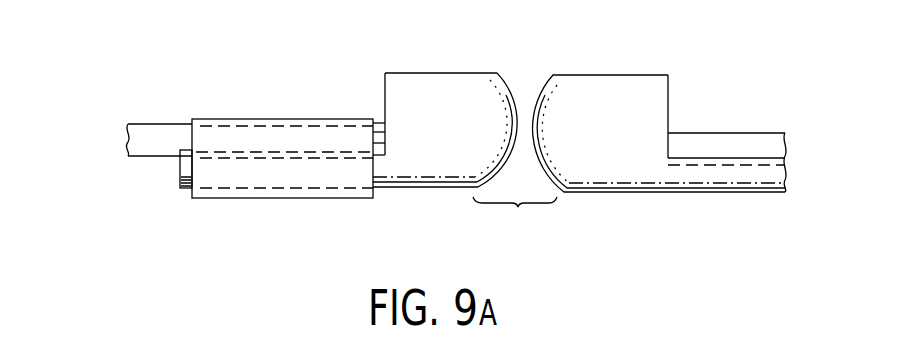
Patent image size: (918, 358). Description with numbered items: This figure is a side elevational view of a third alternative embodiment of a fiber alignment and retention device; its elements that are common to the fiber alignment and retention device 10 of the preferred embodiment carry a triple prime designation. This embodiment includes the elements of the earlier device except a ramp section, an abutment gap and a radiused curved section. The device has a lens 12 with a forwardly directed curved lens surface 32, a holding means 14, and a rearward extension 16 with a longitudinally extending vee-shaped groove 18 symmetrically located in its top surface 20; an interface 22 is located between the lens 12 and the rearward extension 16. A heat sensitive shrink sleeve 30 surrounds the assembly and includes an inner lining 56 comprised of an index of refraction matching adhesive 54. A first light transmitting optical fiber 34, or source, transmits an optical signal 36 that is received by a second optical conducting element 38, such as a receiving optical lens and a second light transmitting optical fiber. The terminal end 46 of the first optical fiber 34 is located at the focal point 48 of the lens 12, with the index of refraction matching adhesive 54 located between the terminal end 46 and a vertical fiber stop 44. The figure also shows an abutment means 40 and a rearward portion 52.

The fiber alignment and retention device 10 is at (149, 41).
The lens 12 is at (506, 31).
The holding means 14 is at (178, 170).
The rearward extension 16 is at (347, 175).
The longitudinally extending vee-shaped groove 18 is at (253, 158).
The top surface 20 is at (291, 147).
The interface 22 is at (385, 157).
The heat sensitive shrink sleeve 30 is at (208, 119).
The forwardly directed curved lens surface 32 is at (512, 107).
The first light transmitting optical fiber 34 is at (138, 124).
The optical signal 36 is at (150, 155).
The second optical conducting element 38 is at (602, 74).
The abutment means 40 is at (385, 83).
The vertical fiber stop 44 is at (469, 128).
The terminal end 46 is at (385, 127).
The focal point 48 is at (385, 145).
The rearward portion 52 is at (411, 29).
The index of refraction matching adhesive 54 is at (386, 137).
The inner lining 56 is at (256, 128).